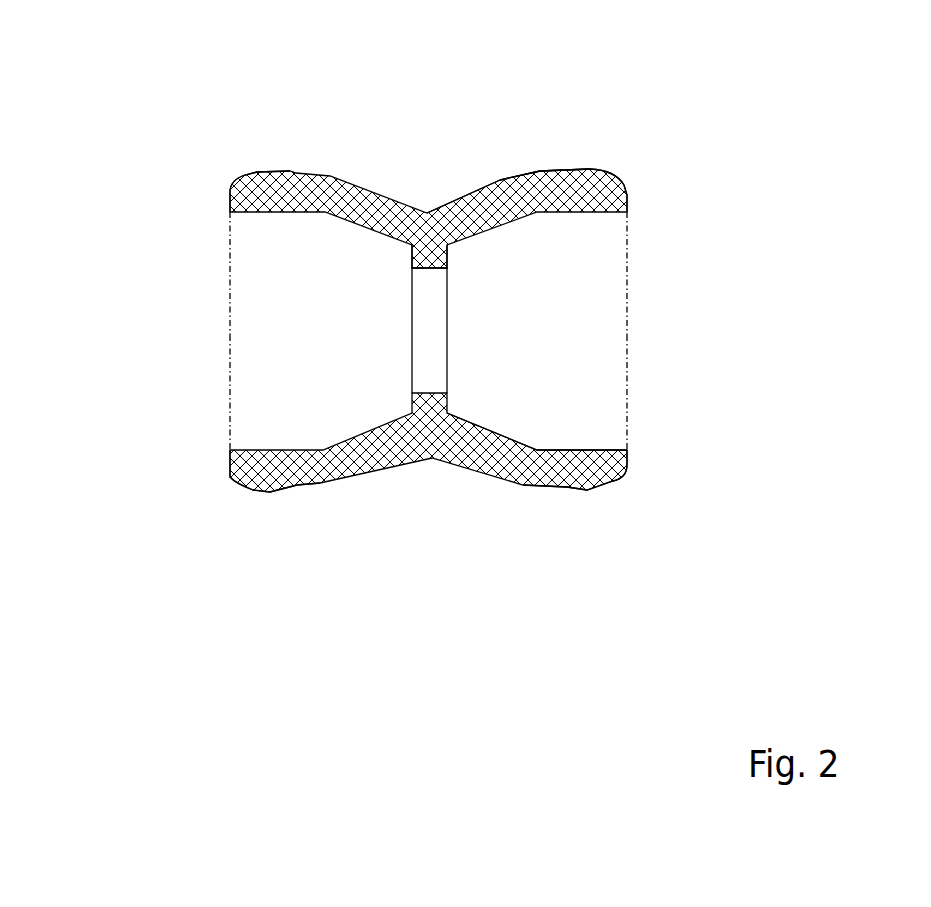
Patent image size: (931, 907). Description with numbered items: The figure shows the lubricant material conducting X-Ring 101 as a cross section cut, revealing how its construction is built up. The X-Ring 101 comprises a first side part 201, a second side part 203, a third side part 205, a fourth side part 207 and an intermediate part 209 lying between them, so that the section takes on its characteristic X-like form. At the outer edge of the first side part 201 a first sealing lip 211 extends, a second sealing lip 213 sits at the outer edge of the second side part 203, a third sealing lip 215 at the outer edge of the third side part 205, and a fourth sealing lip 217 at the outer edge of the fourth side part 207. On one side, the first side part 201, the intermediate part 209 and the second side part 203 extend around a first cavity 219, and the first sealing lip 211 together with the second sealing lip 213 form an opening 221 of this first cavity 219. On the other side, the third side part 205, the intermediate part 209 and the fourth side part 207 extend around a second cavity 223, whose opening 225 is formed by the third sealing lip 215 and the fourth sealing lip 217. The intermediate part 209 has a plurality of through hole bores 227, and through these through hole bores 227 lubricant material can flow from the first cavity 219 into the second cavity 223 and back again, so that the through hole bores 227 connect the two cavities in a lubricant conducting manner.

The X-Ring 101 is at (542, 161).
The first side part 201 is at (345, 182).
The second side part 203 is at (367, 450).
The third side part 205 is at (490, 183).
The fourth side part 207 is at (477, 453).
The intermediate part 209 is at (448, 252).
The first sealing lip 211 is at (268, 172).
The second sealing lip 213 is at (262, 490).
The third sealing lip 215 is at (600, 168).
The fourth sealing lip 217 is at (588, 487).
The first cavity 219 is at (297, 357).
The opening 221 is at (230, 310).
The second cavity 223 is at (557, 397).
The opening 225 is at (613, 424).
The through hole bores 227 is at (432, 332).